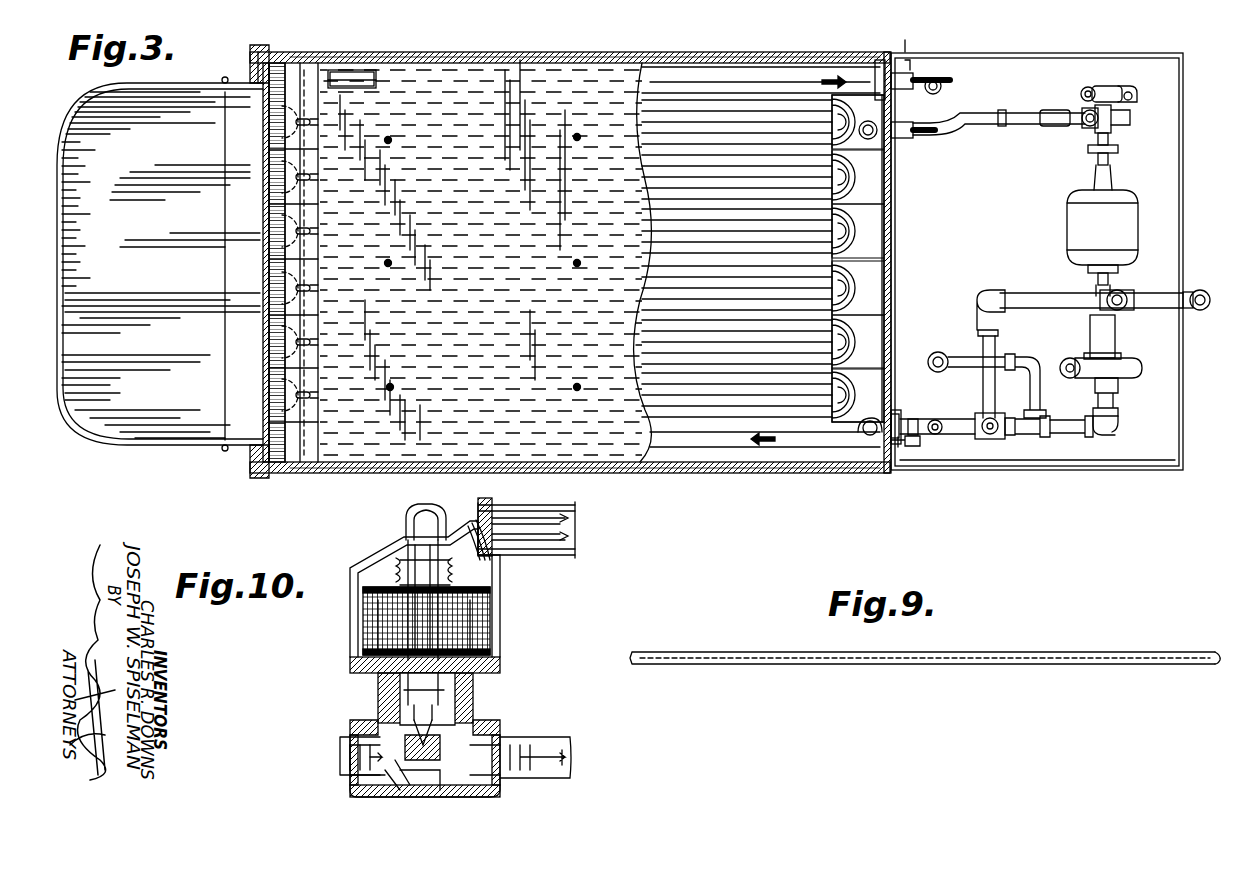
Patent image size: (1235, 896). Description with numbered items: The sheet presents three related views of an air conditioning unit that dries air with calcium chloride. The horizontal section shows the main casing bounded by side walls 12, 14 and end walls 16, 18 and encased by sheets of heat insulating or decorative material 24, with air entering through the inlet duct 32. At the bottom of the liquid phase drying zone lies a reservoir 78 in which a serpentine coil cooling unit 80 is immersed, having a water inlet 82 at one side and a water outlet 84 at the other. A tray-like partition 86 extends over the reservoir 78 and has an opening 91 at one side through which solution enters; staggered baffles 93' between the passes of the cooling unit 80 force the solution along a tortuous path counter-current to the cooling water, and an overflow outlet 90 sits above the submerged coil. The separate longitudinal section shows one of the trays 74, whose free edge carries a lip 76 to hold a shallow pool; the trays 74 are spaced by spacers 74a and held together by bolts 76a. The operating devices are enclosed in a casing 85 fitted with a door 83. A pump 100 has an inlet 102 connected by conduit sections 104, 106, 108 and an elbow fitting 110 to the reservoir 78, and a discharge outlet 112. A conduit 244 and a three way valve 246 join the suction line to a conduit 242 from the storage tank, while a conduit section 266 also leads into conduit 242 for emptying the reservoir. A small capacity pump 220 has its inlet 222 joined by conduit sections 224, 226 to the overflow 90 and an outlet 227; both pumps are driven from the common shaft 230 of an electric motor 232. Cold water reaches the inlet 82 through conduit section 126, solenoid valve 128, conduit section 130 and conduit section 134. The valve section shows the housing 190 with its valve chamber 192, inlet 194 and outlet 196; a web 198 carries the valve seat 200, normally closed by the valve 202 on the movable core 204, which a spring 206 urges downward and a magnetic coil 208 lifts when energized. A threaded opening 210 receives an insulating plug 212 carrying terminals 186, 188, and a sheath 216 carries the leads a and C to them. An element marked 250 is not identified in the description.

In FIG. 3, the side wall 12 is at (690, 473).
In FIG. 3, the side wall 14 is at (447, 52).
In FIG. 3, the end wall 16 is at (258, 52).
In FIG. 3, the end wall 18 is at (890, 272).
In FIG. 3, the heat insulating or decorative material 24 is at (810, 473).
In FIG. 3, the inlet duct 32 is at (160, 264).
In FIG. 9, the trays 74 is at (915, 665).
In FIG. 3, the spacers 74a is at (577, 137).
In FIG. 9, the lips 76 is at (1218, 664).
In FIG. 3, the bolts 76a is at (326, 142).
In FIG. 3, the reservoir 78 is at (885, 248).
In FIG. 3, the serpentine coil cooling unit 80 is at (762, 468).
In FIG. 3, the water inlet 82 is at (893, 466).
In FIG. 3, the door 83 is at (1058, 470).
In FIG. 3, the water outlet 84 is at (943, 86).
In FIG. 3, the casing 85 is at (1179, 236).
In FIG. 3, the partition 86 is at (548, 70).
In FIG. 3, the overflow outlet 90 is at (868, 120).
In FIG. 3, the opening 91 is at (370, 70).
In FIG. 3, the baffles 93' is at (822, 219).
In FIG. 3, the pump 100 is at (1123, 380).
In FIG. 3, the pump inlet 102 is at (1108, 420).
In FIG. 3, the conduit section 104 is at (1070, 436).
In FIG. 3, the conduit section 106 is at (1010, 440).
In FIG. 3, the conduit section 108 is at (962, 434).
In FIG. 3, the elbow fitting 110 is at (898, 412).
In FIG. 3, the pump outlet 112 is at (1064, 358).
In FIG. 10, the conduit section 126 is at (570, 750).
In FIG. 10, the solenoid valve 128 is at (328, 555).
In FIG. 10, the conduit section 130 is at (340, 750).
In FIG. 3, the conduit section 134 is at (922, 434).
In FIG. 10, the terminal 186 is at (535, 505).
In FIG. 10, the terminal 188 is at (550, 549).
In FIG. 10, the housing 190 is at (355, 795).
In FIG. 10, the valve chamber 192 is at (445, 775).
In FIG. 10, the inlet 194 is at (385, 740).
In FIG. 10, the outlet 196 is at (470, 760).
In FIG. 10, the web 198 is at (445, 745).
In FIG. 10, the valve seat 200 is at (400, 700).
In FIG. 10, the valve 202 is at (440, 730).
In FIG. 10, the movable core 204 is at (395, 668).
In FIG. 10, the spring 206 is at (395, 545).
In FIG. 10, the magnetic coil 208 is at (470, 625).
In FIG. 10, the threaded opening 210 is at (478, 520).
In FIG. 10, the plug 212 is at (425, 500).
In FIG. 10, the sheath 216 is at (600, 549).
In FIG. 3, the small capacity pump 220 is at (1108, 86).
In FIG. 3, the inlet 222 is at (1132, 86).
In FIG. 3, the conduit section 224 is at (1098, 130).
In FIG. 3, the conduit section 226 is at (992, 126).
In FIG. 3, the outlet 227 is at (1088, 87).
In FIG. 3, the common shaft 230 is at (1096, 280).
In FIG. 3, the electric motor 232 is at (1068, 226).
In FIG. 3, the conduit 242 is at (1202, 312).
In FIG. 3, the conduit 244 is at (1018, 293).
In FIG. 3, the three way valve 246 is at (990, 440).
In FIG. 3, the valve 250 is at (1083, 110).
In FIG. 3, the conduit section 266 is at (1055, 395).
In FIG. 10, the lead C is at (575, 520).
In FIG. 10, the lead a is at (575, 538).